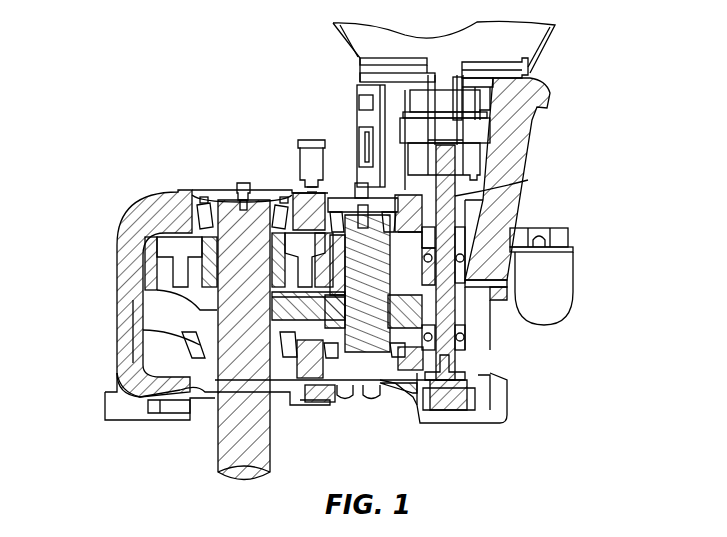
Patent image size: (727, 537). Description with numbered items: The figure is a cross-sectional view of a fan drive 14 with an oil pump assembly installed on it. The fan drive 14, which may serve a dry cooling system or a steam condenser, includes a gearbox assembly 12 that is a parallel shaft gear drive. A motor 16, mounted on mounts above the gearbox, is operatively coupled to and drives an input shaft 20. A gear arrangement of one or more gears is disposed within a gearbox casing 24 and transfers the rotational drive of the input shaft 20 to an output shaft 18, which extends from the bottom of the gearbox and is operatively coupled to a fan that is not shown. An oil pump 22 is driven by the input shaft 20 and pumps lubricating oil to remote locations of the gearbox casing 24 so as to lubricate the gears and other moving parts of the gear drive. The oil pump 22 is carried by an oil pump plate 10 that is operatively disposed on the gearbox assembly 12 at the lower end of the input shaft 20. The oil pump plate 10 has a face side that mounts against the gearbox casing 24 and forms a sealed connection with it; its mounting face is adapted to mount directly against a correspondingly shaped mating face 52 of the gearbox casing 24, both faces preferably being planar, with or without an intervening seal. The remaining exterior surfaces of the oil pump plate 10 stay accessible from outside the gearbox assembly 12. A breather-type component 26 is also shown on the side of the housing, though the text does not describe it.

The oil pump plate 10 is at (430, 407).
The gearbox assembly 12 is at (118, 237).
The fan drive 14 is at (87, 163).
The motor 16 is at (550, 40).
The output shaft 18 is at (267, 430).
The input shaft 20 is at (455, 194).
The oil pump 22 is at (450, 373).
The gearbox casing 24 is at (112, 358).
The breather cup 26 is at (565, 271).
The mating face 52 is at (413, 397).